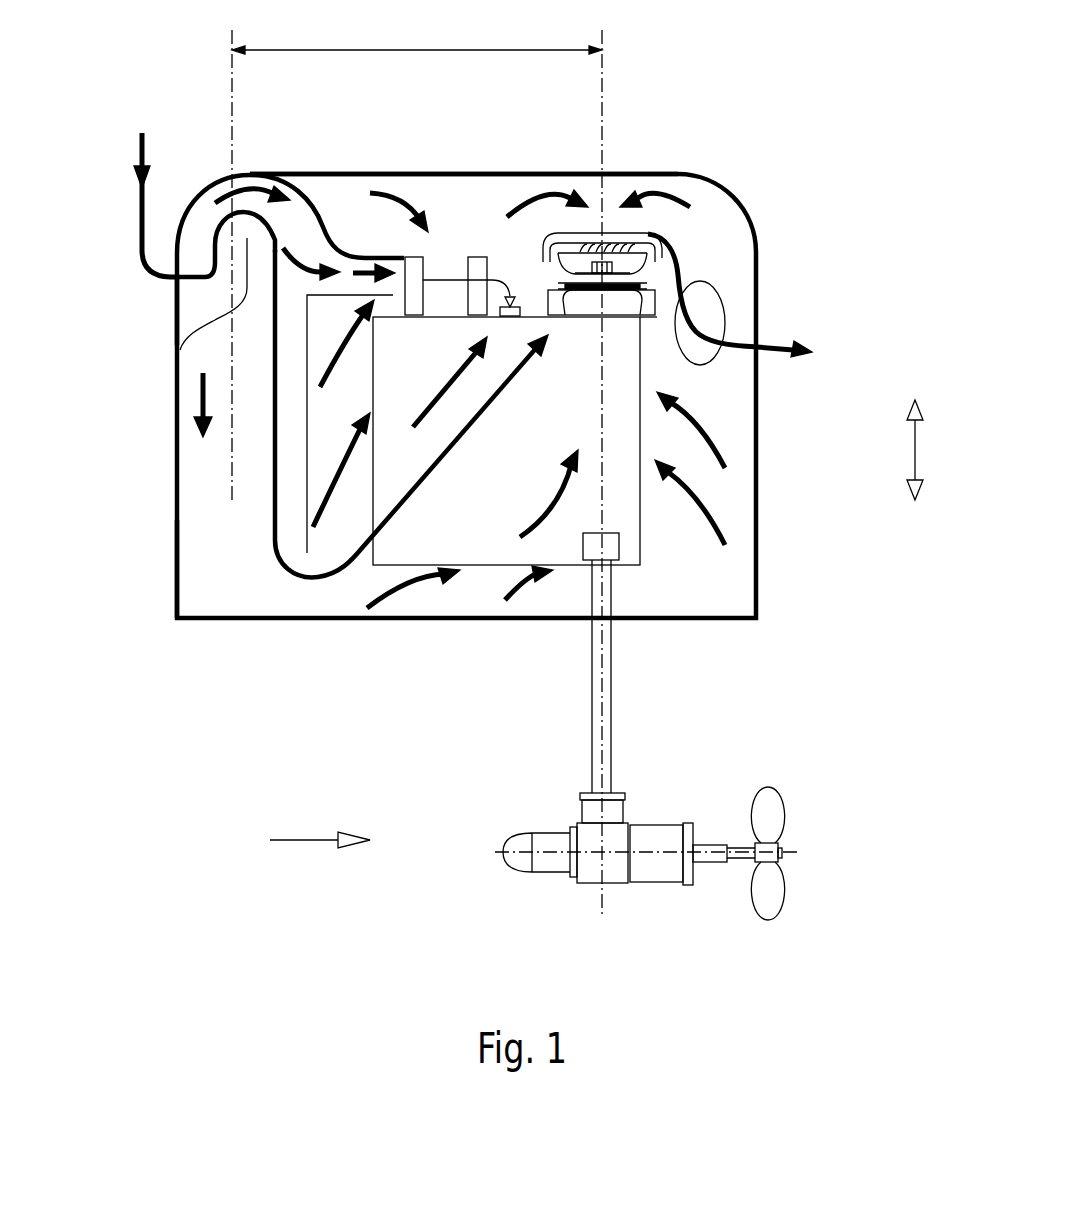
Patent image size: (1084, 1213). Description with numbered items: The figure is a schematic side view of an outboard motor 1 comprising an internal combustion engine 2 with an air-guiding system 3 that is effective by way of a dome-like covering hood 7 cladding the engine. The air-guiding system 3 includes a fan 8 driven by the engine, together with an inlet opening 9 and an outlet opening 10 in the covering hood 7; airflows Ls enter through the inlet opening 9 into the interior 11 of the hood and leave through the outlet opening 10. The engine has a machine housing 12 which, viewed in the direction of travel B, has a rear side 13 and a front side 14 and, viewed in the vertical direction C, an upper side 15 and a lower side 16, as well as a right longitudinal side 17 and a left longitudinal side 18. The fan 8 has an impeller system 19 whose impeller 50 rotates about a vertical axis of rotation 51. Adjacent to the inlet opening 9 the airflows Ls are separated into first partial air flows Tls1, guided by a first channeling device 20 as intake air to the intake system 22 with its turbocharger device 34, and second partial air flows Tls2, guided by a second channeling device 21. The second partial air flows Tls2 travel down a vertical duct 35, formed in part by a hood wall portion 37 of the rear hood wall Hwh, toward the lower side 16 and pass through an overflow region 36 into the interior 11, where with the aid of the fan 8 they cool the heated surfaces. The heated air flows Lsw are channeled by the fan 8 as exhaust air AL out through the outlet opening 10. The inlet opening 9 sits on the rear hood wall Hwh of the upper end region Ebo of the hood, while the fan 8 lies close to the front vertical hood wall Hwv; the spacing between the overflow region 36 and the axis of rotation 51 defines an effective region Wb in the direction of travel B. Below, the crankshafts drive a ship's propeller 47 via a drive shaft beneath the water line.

The outboard motor 1 is at (749, 89).
The internal combustion engine 2 is at (505, 581).
The air-guiding system 3 is at (499, 197).
The covering hood 7 is at (410, 157).
The fan 8 is at (604, 216).
The inlet opening 9 is at (173, 302).
The outlet opening 10 is at (702, 308).
The interior 11 is at (212, 537).
The machine housing 12 is at (653, 576).
The rear side 13 is at (360, 422).
The front side 14 is at (640, 523).
The upper side 15 is at (434, 329).
The lower side 16 is at (484, 579).
The right longitudinal side 17 is at (618, 410).
The left longitudinal side 18 is at (385, 382).
The impeller system 19 is at (683, 224).
The first channeling device 20 is at (357, 242).
The second channeling device 21 is at (208, 357).
The intake system 22 is at (510, 317).
The turbocharger device 34 is at (445, 280).
The vertical duct 35 is at (197, 528).
The overflow region 36 is at (302, 593).
The hood wall portion 37 is at (178, 335).
The ship's propeller 47 is at (766, 935).
The impeller 50 is at (622, 262).
The vertical axis of rotation 51 is at (602, 305).
The effective region Wb is at (417, 34).
The upper end region Ebo is at (216, 148).
The first partial air flows Tls1 is at (252, 187).
The second partial air flows Tls2 is at (200, 393).
The heated air flows Lsw is at (553, 177).
The airflows Ls is at (160, 216).
The exhaust air AL is at (779, 329).
The rear hood wall Hwh is at (164, 431).
The front vertical hood wall Hwv is at (770, 450).
The vertical direction C is at (913, 448).
The direction of travel B is at (320, 829).